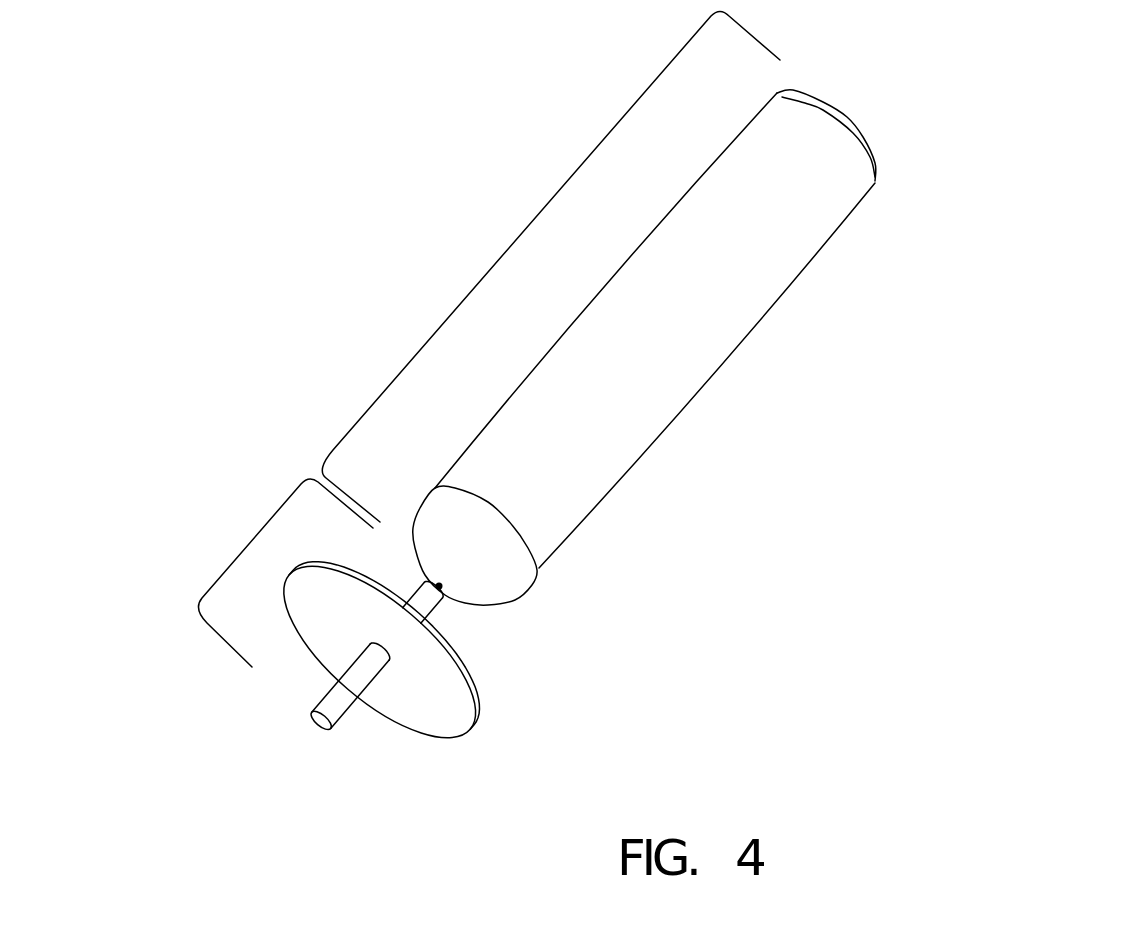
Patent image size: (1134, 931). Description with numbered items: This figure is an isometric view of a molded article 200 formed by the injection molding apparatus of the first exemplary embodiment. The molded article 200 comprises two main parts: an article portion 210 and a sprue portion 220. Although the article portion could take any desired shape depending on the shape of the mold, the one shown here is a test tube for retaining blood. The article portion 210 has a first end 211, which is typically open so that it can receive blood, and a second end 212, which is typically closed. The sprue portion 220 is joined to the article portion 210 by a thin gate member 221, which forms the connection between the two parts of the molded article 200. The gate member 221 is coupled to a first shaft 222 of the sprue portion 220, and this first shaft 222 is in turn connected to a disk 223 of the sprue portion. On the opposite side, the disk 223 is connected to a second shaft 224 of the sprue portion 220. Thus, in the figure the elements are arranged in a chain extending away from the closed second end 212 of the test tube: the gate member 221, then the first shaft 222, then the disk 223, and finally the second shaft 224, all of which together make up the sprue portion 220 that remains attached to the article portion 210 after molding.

The molded article 200 is at (937, 239).
The article portion 210 is at (510, 245).
The first end 211 is at (850, 107).
The second end 212 is at (524, 611).
The sprue portion 220 is at (250, 543).
The gate member 221 is at (464, 587).
The first shaft 222 is at (430, 618).
The disk 223 is at (422, 735).
The second shaft 224 is at (341, 716).